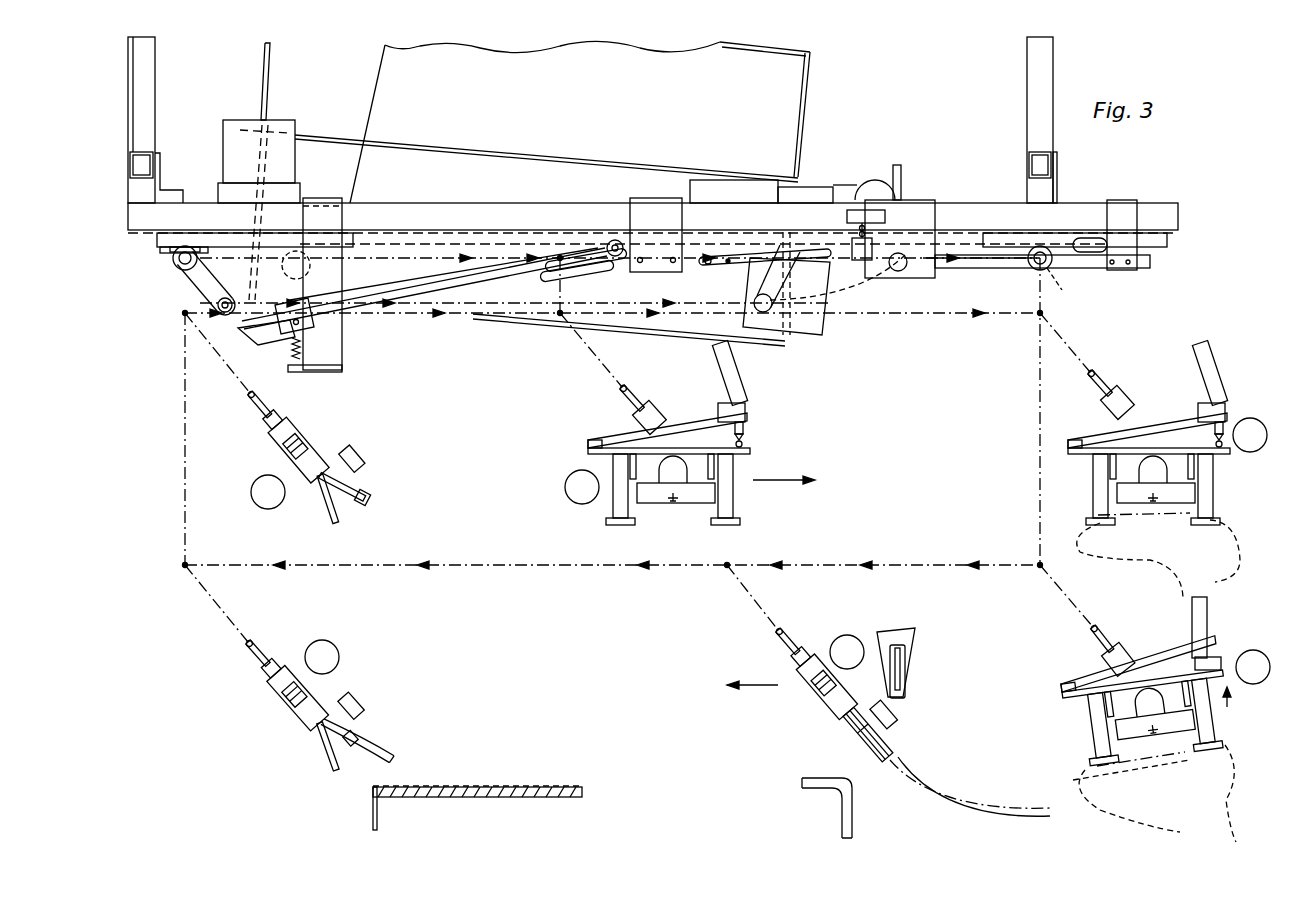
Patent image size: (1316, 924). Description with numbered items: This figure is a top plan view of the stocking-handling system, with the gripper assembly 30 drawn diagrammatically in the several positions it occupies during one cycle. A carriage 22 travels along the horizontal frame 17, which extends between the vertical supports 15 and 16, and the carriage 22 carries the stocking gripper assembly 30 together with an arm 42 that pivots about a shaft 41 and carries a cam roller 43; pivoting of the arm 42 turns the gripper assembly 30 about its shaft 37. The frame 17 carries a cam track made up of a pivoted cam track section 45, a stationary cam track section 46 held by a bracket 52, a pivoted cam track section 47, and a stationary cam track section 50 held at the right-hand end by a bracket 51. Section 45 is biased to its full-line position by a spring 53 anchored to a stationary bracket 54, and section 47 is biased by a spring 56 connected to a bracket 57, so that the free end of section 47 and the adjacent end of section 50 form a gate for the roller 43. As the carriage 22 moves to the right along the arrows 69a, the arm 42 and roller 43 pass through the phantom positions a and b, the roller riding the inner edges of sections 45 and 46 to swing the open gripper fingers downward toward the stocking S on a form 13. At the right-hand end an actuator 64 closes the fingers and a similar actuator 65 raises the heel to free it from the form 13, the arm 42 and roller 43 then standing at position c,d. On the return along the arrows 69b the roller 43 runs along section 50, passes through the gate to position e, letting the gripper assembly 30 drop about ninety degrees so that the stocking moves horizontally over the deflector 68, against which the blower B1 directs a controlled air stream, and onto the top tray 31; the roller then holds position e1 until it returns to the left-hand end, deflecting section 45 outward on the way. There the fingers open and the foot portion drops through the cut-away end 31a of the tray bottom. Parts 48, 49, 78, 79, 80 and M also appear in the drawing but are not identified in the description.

The form 13 is at (1220, 578).
The vertical support 15 is at (1029, 165).
The vertical support 16 is at (128, 172).
The horizontal frame 17 is at (1152, 215).
The carriage 22 is at (160, 240).
The stocking gripper assembly 30 is at (263, 471).
The stocking tray 31 is at (445, 172).
The cut-away end of tray bottom 31a is at (362, 165).
The shaft 37 is at (253, 406).
The shaft 41 is at (176, 262).
The arm 42 is at (210, 283).
The cam roller 43 is at (195, 313).
The pivoted cam track section 45 is at (262, 332).
The stationary cam track section 46 is at (619, 266).
The pivoted cam track section 47 is at (742, 261).
The link 48 is at (596, 264).
The link bar 49 is at (697, 264).
The stationary cam track section 50 is at (1090, 265).
The bracket 51 is at (1120, 200).
The bracket 52 is at (656, 219).
The spring 53 is at (292, 350).
The stationary bracket 54 is at (342, 348).
The spring 56 is at (864, 236).
The bracket 57 is at (852, 210).
The actuator 64 is at (350, 460).
The actuator 65 is at (730, 368).
The deflector 68 is at (808, 336).
The arrows 69a is at (903, 318).
The arrows 69b is at (906, 565).
The support leg 78 is at (310, 745).
The curved arm 79 is at (380, 744).
The support leg 80 is at (1095, 492).
The motor M is at (240, 146).
The stocking S is at (370, 822).
The blower B1 is at (899, 170).
The phantom line position a is at (296, 265).
The phantom line position b is at (560, 258).
The phantom line position e is at (838, 280).
The phantom line position e1 is at (807, 283).
The phantom line position c,d is at (1066, 288).